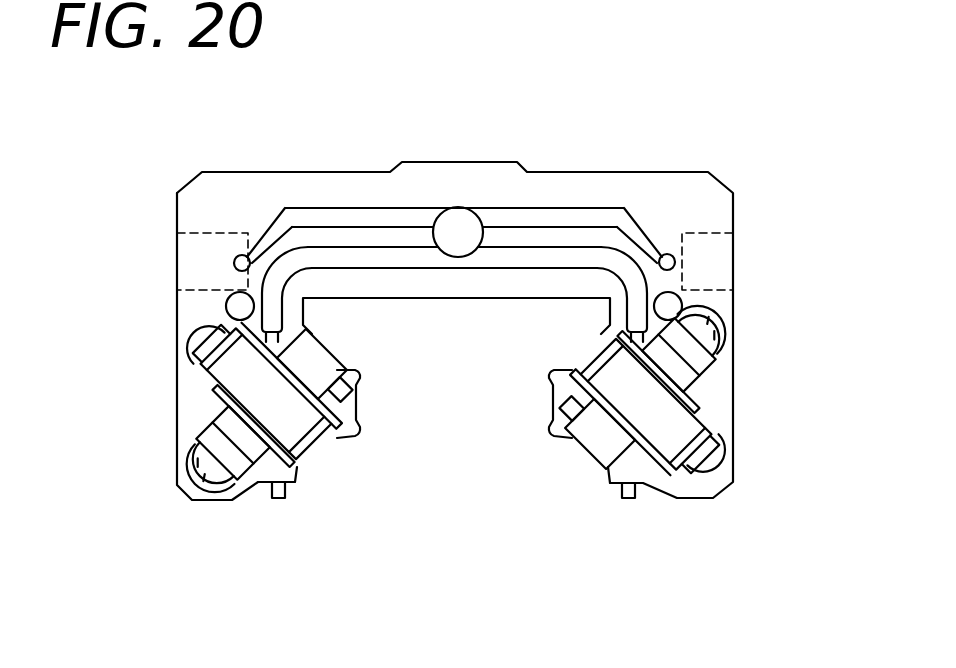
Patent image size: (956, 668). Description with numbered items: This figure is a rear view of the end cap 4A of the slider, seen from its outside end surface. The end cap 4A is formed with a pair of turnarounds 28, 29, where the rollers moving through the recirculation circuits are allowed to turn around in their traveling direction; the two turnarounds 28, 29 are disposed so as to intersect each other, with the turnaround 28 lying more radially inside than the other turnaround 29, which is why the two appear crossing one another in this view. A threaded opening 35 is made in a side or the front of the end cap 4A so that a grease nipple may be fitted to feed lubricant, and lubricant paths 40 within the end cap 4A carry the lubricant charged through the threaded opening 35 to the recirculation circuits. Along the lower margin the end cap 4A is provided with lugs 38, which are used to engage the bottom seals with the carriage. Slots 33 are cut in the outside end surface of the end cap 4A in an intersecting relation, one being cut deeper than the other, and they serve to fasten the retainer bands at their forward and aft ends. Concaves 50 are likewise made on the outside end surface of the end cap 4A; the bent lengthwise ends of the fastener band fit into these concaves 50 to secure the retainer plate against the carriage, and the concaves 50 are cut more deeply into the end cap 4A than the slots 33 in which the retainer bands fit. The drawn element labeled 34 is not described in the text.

The end cap 4A is at (585, 167).
The lubricant paths 40 is at (377, 255).
The threaded opening 35 is at (458, 232).
The connection terminal 34 is at (673, 307).
The slots 33 is at (297, 340).
The turnaround 29 is at (248, 385).
The turnaround 28 is at (228, 445).
The lugs 38 is at (277, 500).
The concaves 50 is at (357, 402).